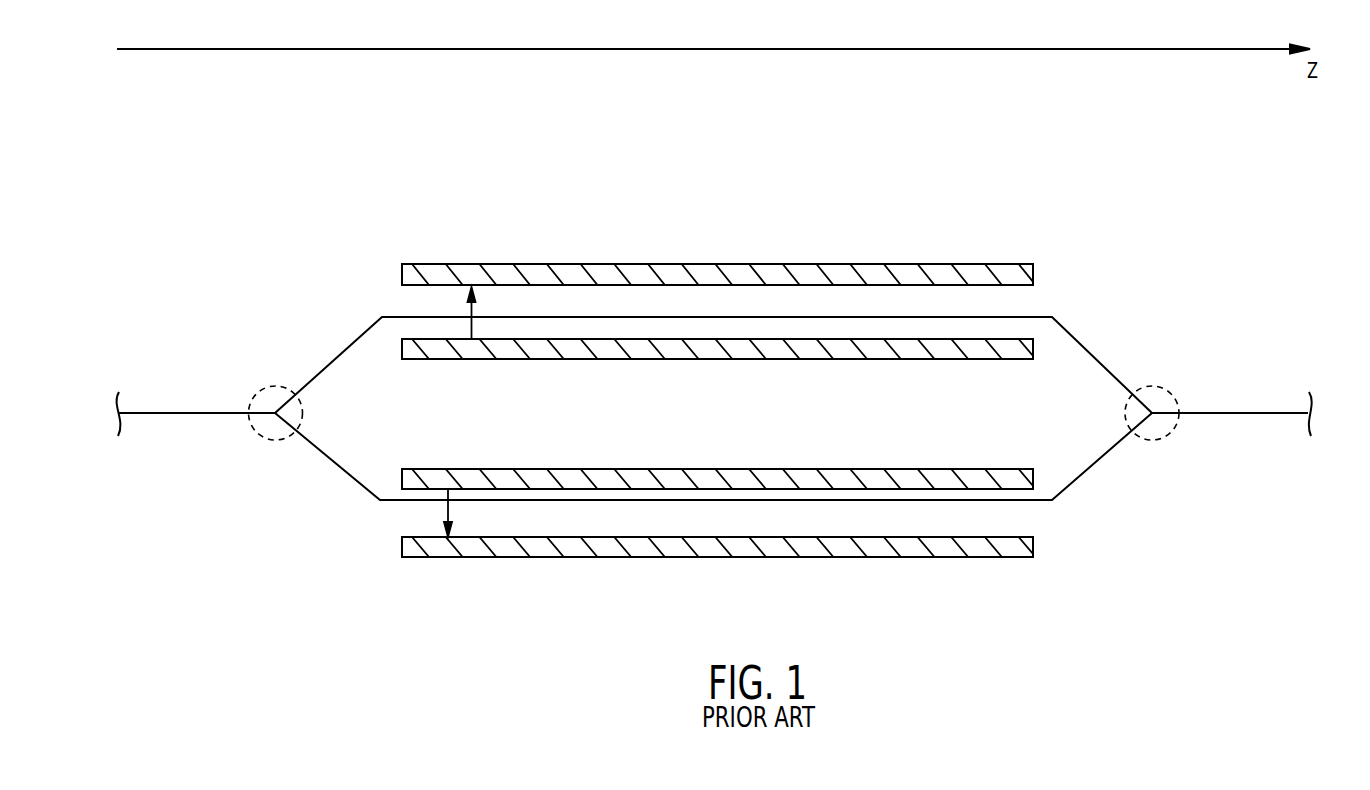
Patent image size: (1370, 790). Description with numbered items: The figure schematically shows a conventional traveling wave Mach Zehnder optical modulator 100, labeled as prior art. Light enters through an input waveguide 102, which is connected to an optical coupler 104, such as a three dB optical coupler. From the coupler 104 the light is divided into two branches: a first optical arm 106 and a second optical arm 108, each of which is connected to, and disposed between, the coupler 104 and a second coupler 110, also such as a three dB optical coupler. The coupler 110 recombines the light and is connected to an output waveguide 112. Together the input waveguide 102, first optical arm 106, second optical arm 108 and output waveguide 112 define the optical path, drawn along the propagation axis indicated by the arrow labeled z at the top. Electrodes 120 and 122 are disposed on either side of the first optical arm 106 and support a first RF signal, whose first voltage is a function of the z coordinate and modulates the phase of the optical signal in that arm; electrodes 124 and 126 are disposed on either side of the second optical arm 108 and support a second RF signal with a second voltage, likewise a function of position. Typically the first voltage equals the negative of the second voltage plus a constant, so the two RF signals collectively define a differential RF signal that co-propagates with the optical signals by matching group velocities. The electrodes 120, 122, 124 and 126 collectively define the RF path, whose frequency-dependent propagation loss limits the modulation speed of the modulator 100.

The traveling wave Mach Zehnder optical modulator 100 is at (320, 179).
The input waveguide 102 is at (178, 412).
The optical coupler 104 is at (271, 386).
The first optical arm 106 is at (1038, 315).
The second optical arm 108 is at (1043, 503).
The coupler 110 is at (1158, 386).
The output waveguide 112 is at (1238, 412).
The electrode 120 is at (568, 263).
The electrode 122 is at (575, 360).
The electrode 124 is at (717, 468).
The electrode 126 is at (720, 558).